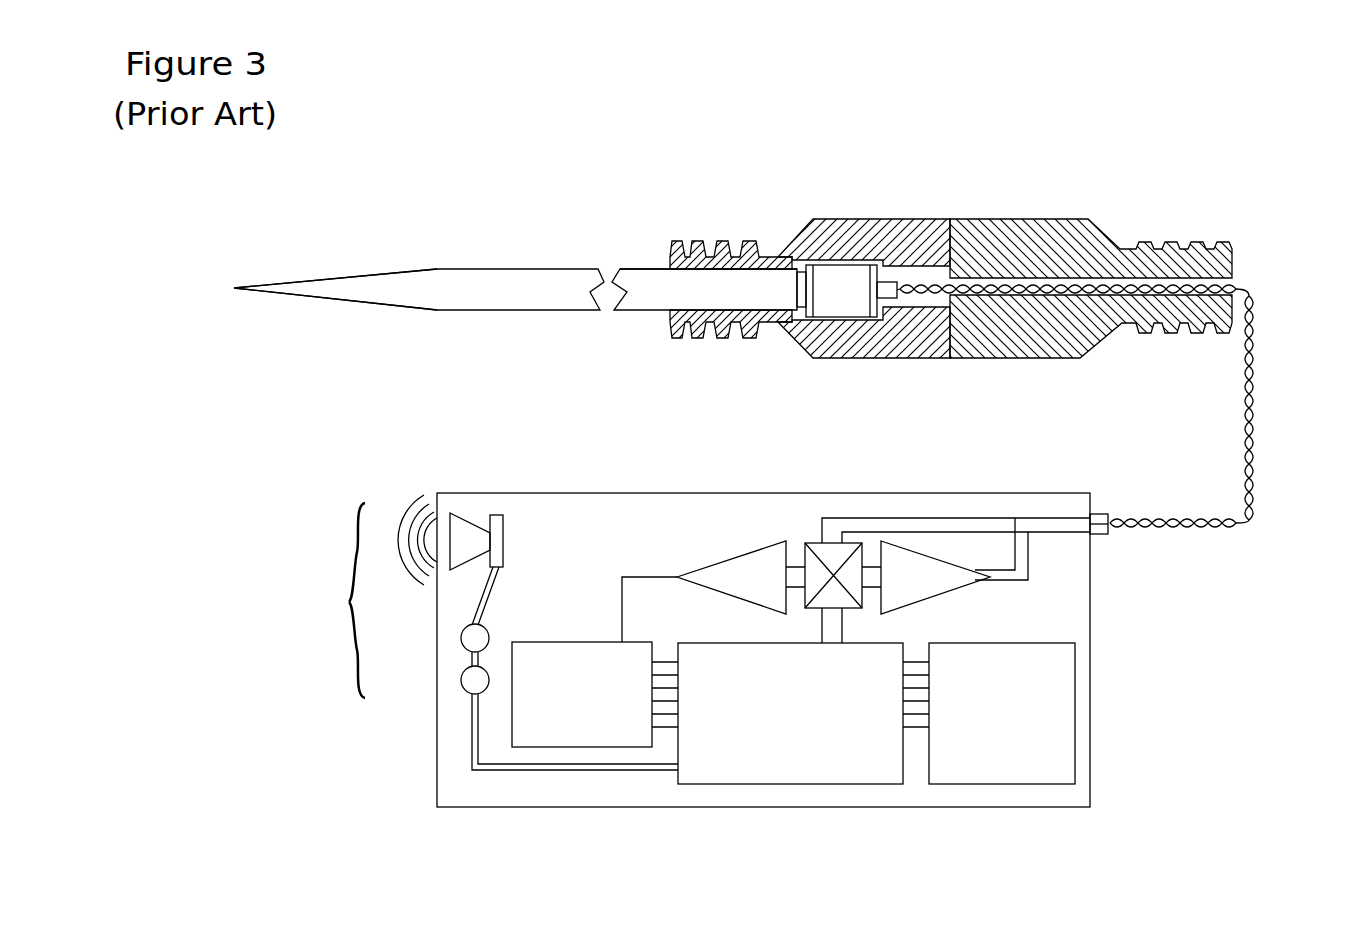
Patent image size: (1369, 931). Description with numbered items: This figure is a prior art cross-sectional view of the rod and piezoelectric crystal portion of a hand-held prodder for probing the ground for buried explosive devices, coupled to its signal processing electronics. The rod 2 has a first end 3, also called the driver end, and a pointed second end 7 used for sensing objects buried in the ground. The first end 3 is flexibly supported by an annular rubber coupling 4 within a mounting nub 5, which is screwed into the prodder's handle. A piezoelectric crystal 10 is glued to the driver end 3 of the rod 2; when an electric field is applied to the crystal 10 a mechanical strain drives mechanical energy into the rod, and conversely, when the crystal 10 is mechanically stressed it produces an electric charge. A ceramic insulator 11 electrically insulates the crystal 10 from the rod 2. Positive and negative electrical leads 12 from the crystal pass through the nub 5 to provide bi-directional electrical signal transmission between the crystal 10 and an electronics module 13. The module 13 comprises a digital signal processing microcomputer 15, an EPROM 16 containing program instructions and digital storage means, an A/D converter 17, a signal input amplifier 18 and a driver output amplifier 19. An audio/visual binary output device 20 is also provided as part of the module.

The rod 2 is at (517, 310).
The first end 3 is at (653, 268).
The annular rubber coupling 4 is at (672, 318).
The mounting nub 5 is at (1062, 218).
The pointed second end 7 is at (367, 303).
The piezoelectric crystal 10 is at (843, 265).
The ceramic insulator 11 is at (790, 268).
The electrical leads 12 is at (1258, 410).
The electronics module 13 is at (618, 492).
The digital signal processing microcomputer 15 is at (808, 784).
The EPROM 16 is at (1013, 784).
The A/D converter 17 is at (577, 747).
The signal input amplifier 18 is at (753, 550).
The driver output amplifier 19 is at (930, 553).
The audio/visual binary output device 20 is at (490, 632).